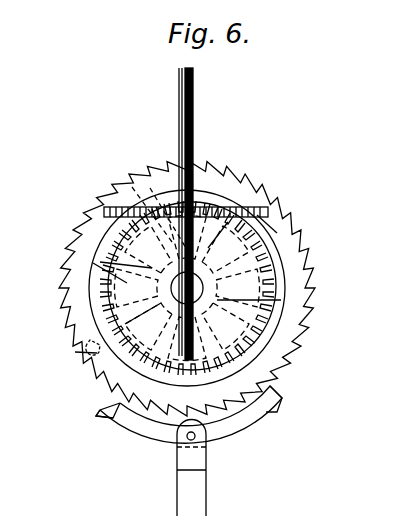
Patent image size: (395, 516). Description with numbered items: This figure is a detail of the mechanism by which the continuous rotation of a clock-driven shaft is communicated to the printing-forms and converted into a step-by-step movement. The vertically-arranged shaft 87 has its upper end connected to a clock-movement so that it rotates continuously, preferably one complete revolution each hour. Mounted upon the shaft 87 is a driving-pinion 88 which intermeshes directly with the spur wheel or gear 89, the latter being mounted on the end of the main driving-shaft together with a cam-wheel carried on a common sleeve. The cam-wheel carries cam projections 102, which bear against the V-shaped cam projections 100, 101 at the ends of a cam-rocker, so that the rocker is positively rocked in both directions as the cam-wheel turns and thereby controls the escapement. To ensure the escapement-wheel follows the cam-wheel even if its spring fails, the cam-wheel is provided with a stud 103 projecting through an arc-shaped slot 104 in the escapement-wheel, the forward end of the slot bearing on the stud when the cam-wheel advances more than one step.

The shaft 87 is at (194, 106).
The driving-pinion 88 is at (270, 207).
The spur wheel or gear 89 is at (262, 222).
The V-shaped cam projection 100 is at (272, 394).
The V-shaped cam projection 101 is at (110, 400).
The cam projections 102 is at (303, 322).
The stud 103 is at (86, 346).
The arc-shaped slot 104 is at (95, 352).